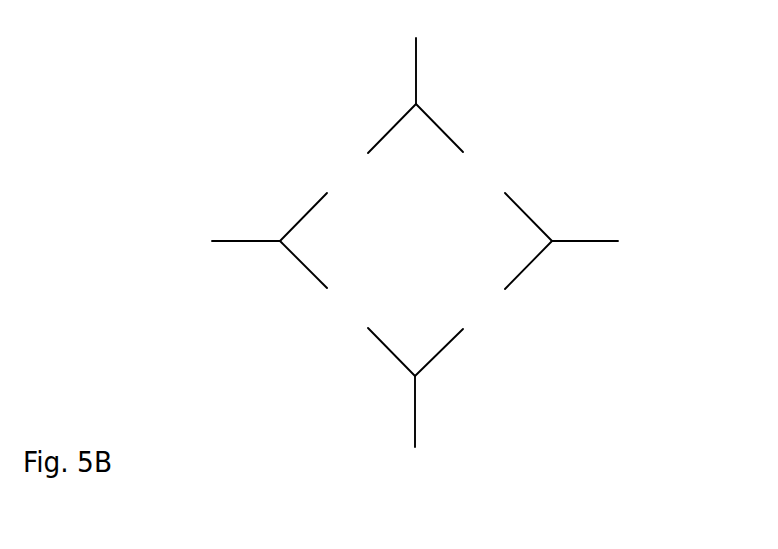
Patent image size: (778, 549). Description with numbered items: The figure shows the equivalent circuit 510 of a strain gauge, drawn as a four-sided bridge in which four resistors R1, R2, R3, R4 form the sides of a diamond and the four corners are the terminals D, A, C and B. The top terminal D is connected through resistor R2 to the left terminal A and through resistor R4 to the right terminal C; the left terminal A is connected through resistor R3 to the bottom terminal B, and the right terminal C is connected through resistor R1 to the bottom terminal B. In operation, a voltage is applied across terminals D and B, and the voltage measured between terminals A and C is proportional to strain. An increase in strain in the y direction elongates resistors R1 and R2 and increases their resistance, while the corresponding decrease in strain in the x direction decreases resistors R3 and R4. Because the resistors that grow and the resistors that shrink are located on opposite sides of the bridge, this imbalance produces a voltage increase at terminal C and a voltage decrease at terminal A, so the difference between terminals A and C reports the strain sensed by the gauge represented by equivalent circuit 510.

The equivalent circuit 510 is at (429, 244).
The resistor R1 is at (483, 308).
The resistor R2 is at (348, 172).
The resistor R3 is at (347, 308).
The resistor R4 is at (484, 172).
The terminal A is at (234, 242).
The terminal B is at (415, 428).
The terminal C is at (597, 242).
The terminal D is at (416, 55).